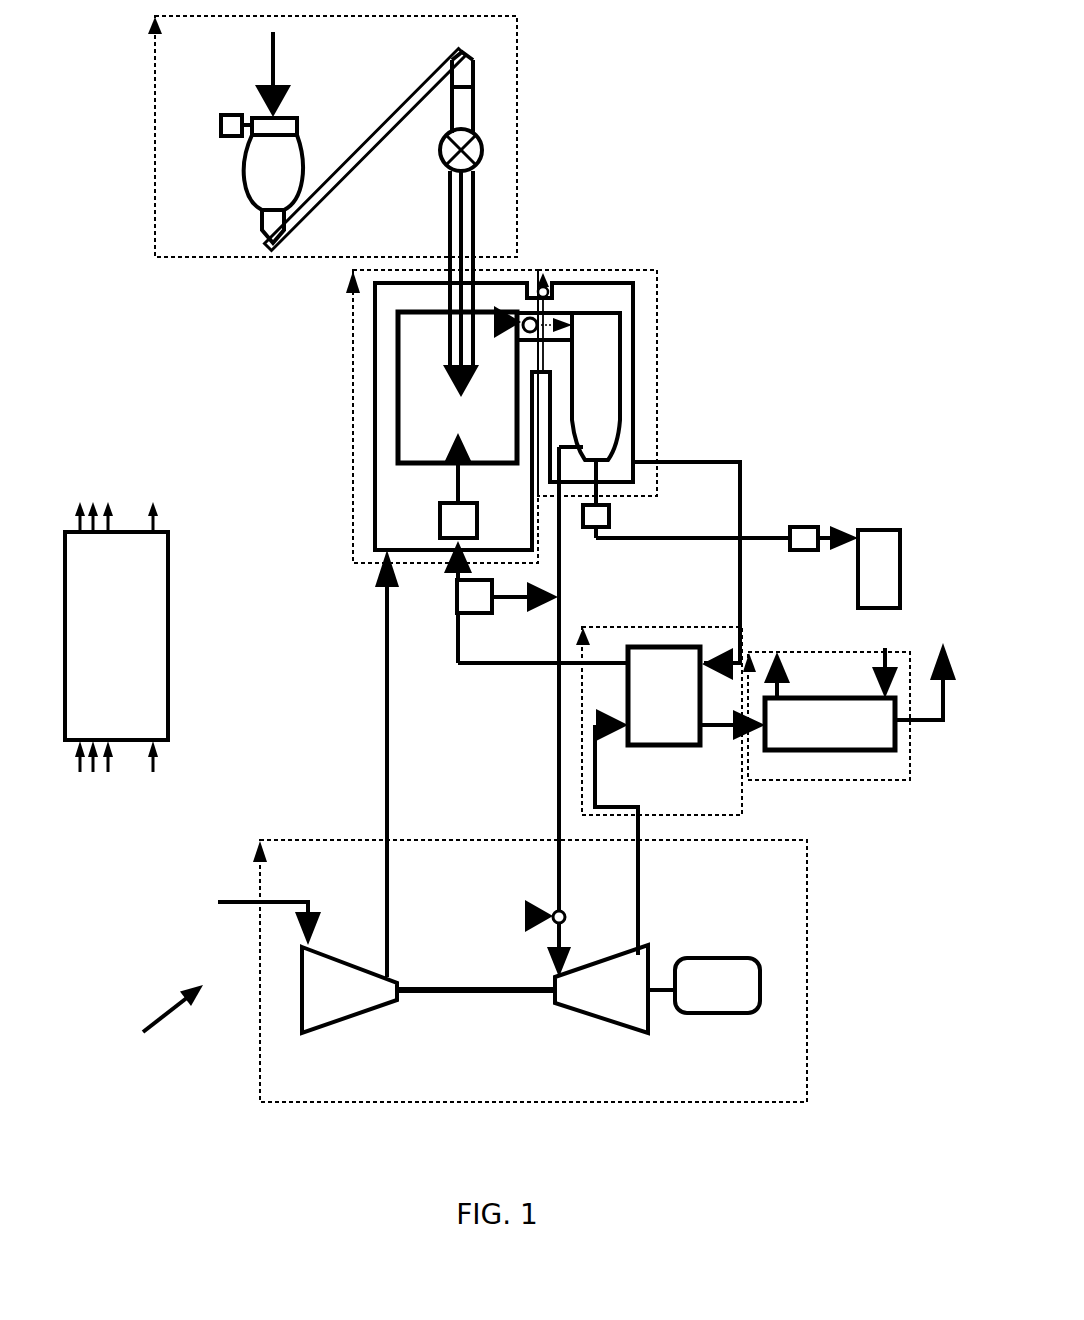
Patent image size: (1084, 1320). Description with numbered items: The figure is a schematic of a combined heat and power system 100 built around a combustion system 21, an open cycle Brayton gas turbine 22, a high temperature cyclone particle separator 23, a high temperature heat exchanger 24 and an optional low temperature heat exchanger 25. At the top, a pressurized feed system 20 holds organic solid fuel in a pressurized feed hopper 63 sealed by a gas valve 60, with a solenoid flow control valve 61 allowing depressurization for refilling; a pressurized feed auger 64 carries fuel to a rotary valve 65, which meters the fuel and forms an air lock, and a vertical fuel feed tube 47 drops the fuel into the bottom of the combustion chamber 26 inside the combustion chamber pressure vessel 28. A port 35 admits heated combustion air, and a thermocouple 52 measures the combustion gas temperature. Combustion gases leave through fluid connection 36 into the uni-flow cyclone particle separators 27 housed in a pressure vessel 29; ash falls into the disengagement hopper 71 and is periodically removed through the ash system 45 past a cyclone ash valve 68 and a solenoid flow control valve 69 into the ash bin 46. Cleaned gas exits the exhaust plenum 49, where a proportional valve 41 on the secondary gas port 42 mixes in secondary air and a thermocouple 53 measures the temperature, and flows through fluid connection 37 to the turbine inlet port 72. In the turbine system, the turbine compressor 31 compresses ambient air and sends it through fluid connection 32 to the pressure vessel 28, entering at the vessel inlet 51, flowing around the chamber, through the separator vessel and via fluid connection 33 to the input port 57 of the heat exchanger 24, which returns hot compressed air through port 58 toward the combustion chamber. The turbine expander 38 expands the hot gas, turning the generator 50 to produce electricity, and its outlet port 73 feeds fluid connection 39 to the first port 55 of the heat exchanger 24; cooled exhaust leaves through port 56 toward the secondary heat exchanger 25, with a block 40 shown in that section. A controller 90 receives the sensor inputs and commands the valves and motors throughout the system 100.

The pressurized feed system 20 is at (500, 101).
The combustion system 21 is at (352, 476).
The open cycle Brayton gas turbine 22 is at (797, 927).
The high temperature cyclone particle separator 23 is at (655, 300).
The high temperature heat exchanger 24 is at (582, 704).
The low temperature heat exchanger 25 is at (868, 770).
The combustion chamber 26 is at (405, 397).
The uni-flow cyclone particle separators 27 is at (612, 352).
The combustion chamber pressure vessel 28 is at (373, 352).
The pressure vessel 29 is at (622, 402).
The turbine compressor 31 is at (347, 1010).
The fluid connection 32 is at (385, 736).
The fluid connection 33 is at (747, 463).
The port 35 is at (452, 472).
The fluid connection 36 is at (560, 318).
The fluid connection 37 is at (556, 851).
The turbine expander 38 is at (593, 1007).
The fluid connection 39 is at (642, 897).
The heat exchanger 40 is at (737, 712).
The proportional valve 41 is at (467, 598).
The secondary gas port 42 is at (518, 603).
The ash system 45 is at (752, 545).
The ash bin 46 is at (880, 535).
The vertical fuel feed tube 47 is at (477, 222).
The exhaust plenum 49 is at (610, 455).
The generator 50 is at (717, 997).
The air inlet 51 is at (385, 554).
The thermocouple 52 is at (543, 273).
The thermocouple 53 is at (535, 923).
The first port 55 is at (621, 738).
The port 56 is at (698, 747).
The input port 57 is at (703, 630).
The port 58 is at (624, 655).
The gas valve 60 is at (252, 125).
The solenoid flow control valve 61 is at (218, 128).
The pressurized feed hopper 63 is at (250, 178).
The pressurized feed auger 64 is at (380, 120).
The rotary valve 65 is at (485, 152).
The cyclone ash valve 68 is at (610, 517).
The solenoid flow control valve 69 is at (803, 552).
The disengagement hopper 71 is at (585, 452).
The turbine inlet port 72 is at (548, 985).
The outlet port 73 is at (643, 943).
The controller 90 is at (101, 584).
The combined heat and power system 100 is at (162, 1025).